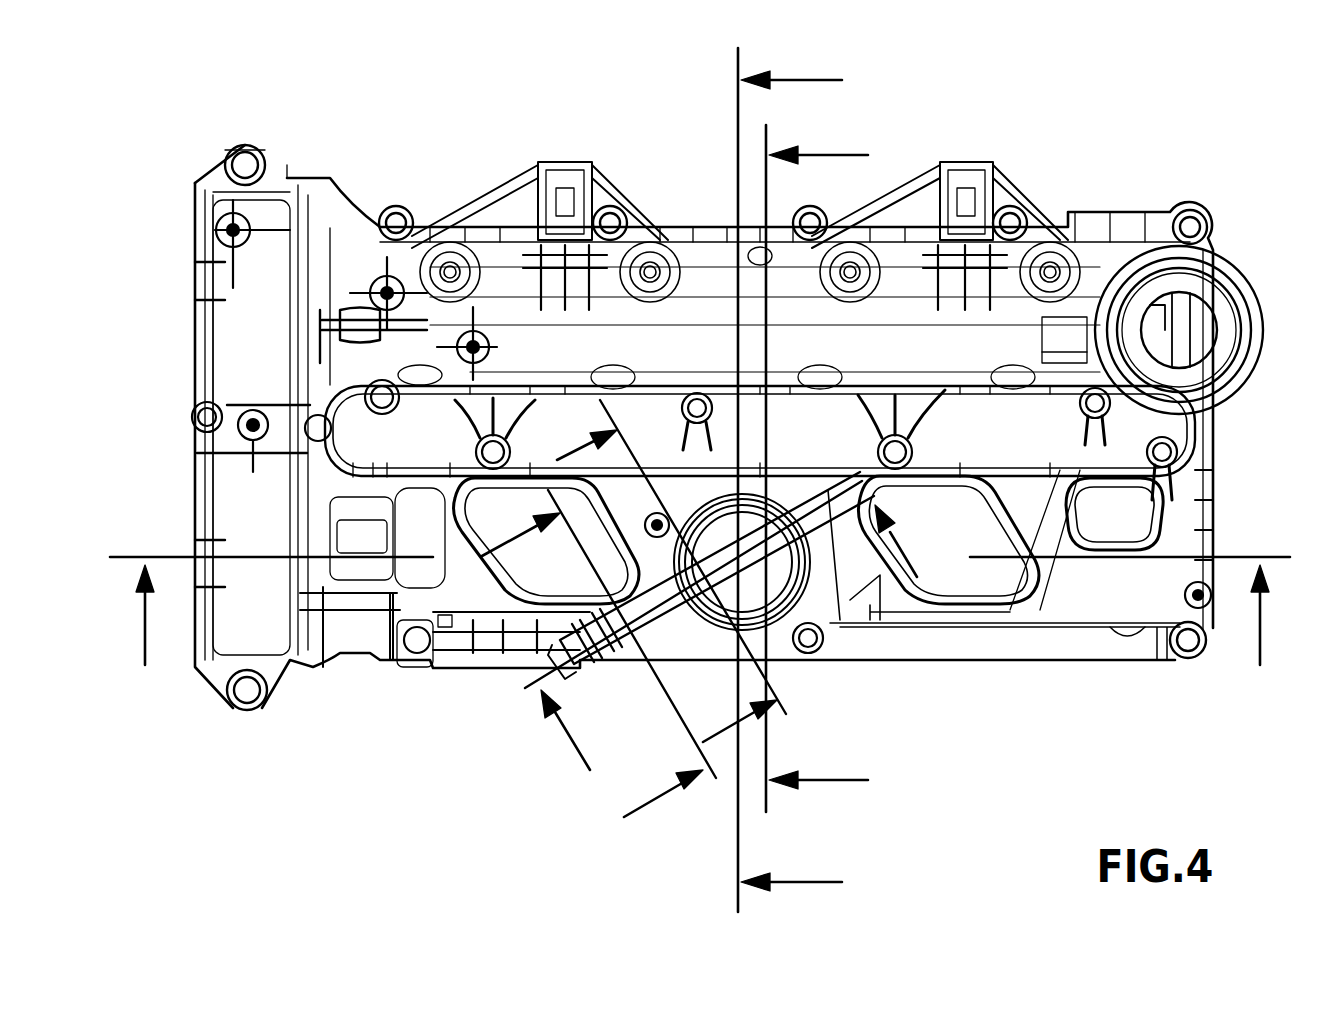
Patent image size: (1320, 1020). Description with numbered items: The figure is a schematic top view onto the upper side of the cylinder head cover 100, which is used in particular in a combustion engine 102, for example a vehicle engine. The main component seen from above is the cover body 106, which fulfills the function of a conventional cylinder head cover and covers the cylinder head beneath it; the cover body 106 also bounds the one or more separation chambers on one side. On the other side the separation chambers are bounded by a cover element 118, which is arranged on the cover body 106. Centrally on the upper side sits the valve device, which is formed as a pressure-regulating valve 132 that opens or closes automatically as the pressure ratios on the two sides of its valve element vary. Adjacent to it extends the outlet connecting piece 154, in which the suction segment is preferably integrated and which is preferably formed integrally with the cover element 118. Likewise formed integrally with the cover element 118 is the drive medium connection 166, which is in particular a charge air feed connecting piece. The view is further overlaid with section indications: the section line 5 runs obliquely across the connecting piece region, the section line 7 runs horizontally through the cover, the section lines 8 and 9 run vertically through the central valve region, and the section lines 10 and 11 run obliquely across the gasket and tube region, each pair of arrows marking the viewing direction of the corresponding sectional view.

The cylinder head cover 100 is at (1044, 112).
The combustion engine 102 is at (1143, 147).
The cover body 106 is at (285, 138).
The cover element 118 is at (880, 622).
The pressure-regulating valve 132 is at (752, 540).
The outlet connecting piece 154 is at (628, 656).
The drive medium connection 166 is at (823, 623).
The section line 5- 5 is at (733, 627).
The section line 7- 7 is at (700, 611).
The section line 8- 8 is at (790, 473).
The section line 9- 9 is at (817, 461).
The section line 10- 10 is at (595, 653).
The section line 11- 11 is at (659, 571).